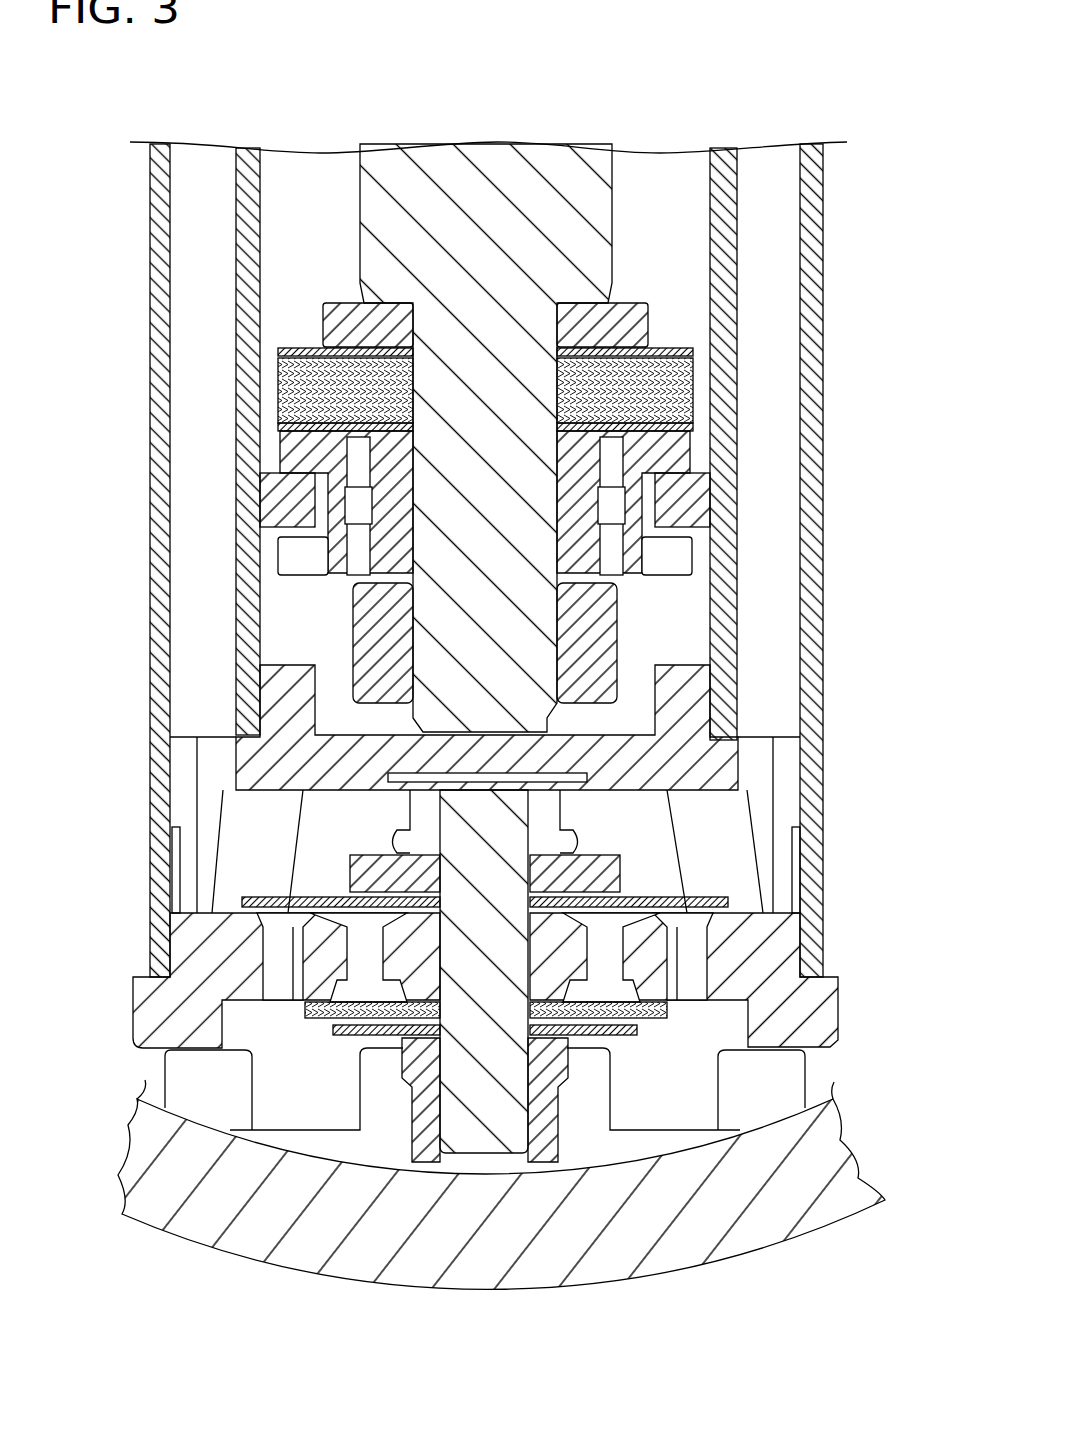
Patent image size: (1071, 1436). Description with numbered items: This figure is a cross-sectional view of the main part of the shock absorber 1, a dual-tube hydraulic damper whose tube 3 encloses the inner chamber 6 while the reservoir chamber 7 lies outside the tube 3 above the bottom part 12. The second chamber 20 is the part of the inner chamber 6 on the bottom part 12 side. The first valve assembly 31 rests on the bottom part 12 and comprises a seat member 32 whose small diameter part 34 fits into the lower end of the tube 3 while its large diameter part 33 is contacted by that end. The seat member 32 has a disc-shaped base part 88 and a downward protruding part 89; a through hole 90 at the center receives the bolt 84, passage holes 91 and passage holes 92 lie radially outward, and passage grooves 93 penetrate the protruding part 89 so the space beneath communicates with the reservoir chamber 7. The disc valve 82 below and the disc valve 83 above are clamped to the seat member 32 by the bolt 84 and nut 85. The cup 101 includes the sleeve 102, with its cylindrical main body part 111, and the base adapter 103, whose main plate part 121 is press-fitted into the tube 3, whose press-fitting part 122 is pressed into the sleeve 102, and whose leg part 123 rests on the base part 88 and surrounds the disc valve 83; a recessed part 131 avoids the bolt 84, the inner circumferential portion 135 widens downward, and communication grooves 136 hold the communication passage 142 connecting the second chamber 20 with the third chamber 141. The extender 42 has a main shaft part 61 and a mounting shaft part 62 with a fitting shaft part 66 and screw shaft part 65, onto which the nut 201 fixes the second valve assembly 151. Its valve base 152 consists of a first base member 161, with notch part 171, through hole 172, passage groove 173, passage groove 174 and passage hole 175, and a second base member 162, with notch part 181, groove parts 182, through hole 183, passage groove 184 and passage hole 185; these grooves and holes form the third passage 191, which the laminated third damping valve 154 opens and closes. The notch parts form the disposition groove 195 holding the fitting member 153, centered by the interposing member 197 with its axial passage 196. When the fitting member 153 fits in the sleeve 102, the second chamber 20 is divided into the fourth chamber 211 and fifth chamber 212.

The shock absorber 1 is at (860, 104).
The tube 3 is at (826, 190).
The inner chamber 6 is at (332, 188).
The reservoir chamber 7 is at (387, 1133).
The bottom part 12 is at (700, 1215).
The second chamber 20 is at (200, 183).
The first valve assembly 31 is at (830, 1062).
The seat member 32 is at (858, 991).
The large diameter part 33 is at (158, 1000).
The small diameter part 34 is at (165, 947).
The extender 42 is at (618, 205).
The main shaft part 61 is at (572, 187).
The mounting shaft part 62 is at (487, 330).
The screw shaft part 65 is at (405, 637).
The fitting shaft part 66 is at (383, 330).
The disc valve 82 is at (318, 1034).
The disc valve 83 is at (229, 898).
The bolt 84 is at (493, 1117).
The nut 85 is at (550, 1127).
The base part 88 is at (745, 973).
The protruding part 89 is at (260, 1090).
The through hole 90 is at (492, 980).
The passage hole 91 is at (363, 960).
The passage hole 92 is at (692, 947).
The passage groove 93 is at (767, 1100).
The cup 101 is at (744, 206).
The sleeve 102 is at (258, 192).
The base adapter 103 is at (810, 749).
The main body part 111 is at (248, 197).
The main plate part 121 is at (263, 760).
The press-fitting part 122 is at (283, 705).
The leg part 123 is at (193, 878).
The recessed part 131 is at (545, 783).
The inner circumferential portion 135 is at (760, 860).
The communication groove 136 is at (790, 883).
The third chamber 141 is at (327, 833).
The communication passage 142 is at (195, 853).
The second valve assembly 151 is at (672, 330).
The valve base 152 is at (620, 395).
The fitting member 153 is at (688, 515).
The third damping valve 154 is at (640, 413).
The first base member 161 is at (352, 357).
The second base member 162 is at (580, 565).
The notch part 171 is at (706, 435).
The through hole 172 is at (528, 435).
The passage groove 173 is at (706, 355).
The passage groove 174 is at (660, 557).
The passage hole 175 is at (677, 336).
The notch part 181 is at (290, 500).
The groove part 182 is at (300, 555).
The through hole 183 is at (362, 390).
The passage groove 184 is at (380, 455).
The passage hole 185 is at (612, 550).
The third passage 191 is at (350, 437).
The disposition groove 195 is at (655, 502).
The axial passage 196 is at (358, 508).
The interposing member 197 is at (360, 483).
The nut 201 is at (590, 630).
The fourth chamber 211 is at (282, 642).
The fifth chamber 212 is at (283, 248).